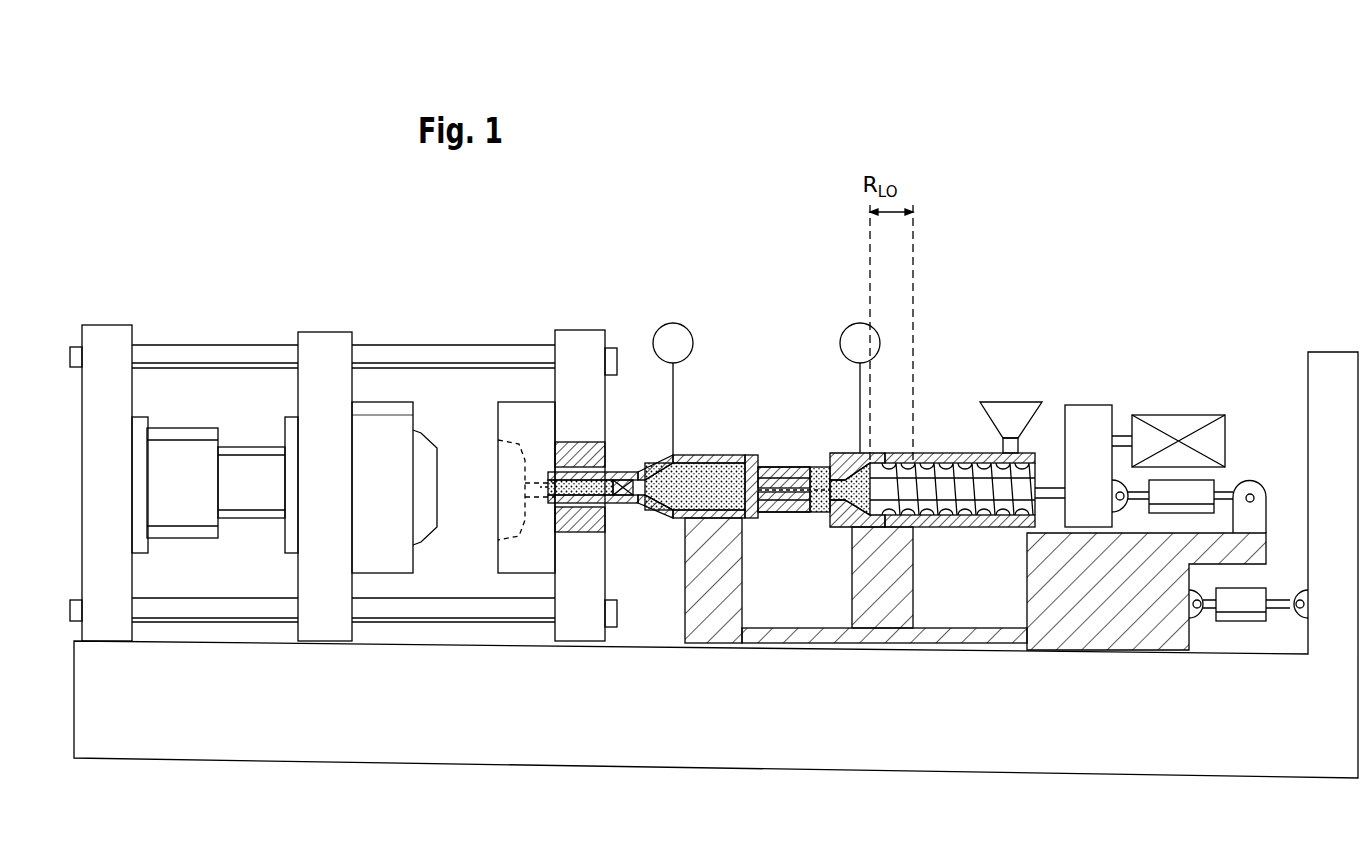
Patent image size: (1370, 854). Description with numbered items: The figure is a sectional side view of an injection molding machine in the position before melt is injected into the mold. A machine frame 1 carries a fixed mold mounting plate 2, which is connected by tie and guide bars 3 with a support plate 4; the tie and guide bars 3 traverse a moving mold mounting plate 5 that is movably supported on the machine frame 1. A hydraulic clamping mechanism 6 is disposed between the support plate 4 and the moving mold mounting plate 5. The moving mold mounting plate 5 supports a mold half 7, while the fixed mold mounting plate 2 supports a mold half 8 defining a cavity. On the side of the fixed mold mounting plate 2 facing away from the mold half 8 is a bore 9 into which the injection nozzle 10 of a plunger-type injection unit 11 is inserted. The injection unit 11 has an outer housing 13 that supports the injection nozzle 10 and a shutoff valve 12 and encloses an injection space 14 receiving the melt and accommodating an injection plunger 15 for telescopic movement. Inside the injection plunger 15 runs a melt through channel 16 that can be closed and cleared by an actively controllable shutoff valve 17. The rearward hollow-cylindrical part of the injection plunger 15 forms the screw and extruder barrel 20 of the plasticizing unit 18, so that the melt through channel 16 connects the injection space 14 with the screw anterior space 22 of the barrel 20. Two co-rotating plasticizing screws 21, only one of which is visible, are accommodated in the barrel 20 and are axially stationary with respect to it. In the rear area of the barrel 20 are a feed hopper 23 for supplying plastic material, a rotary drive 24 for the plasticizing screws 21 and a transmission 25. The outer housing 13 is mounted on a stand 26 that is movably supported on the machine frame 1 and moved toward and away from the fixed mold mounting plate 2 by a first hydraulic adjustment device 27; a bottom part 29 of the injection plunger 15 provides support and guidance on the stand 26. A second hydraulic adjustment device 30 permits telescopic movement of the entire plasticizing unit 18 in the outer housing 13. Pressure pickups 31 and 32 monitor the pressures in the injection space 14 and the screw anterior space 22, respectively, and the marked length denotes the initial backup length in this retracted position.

The machine frame 1 is at (1057, 701).
The fixed mold mounting plate 2 is at (568, 345).
The tie and guide bars 3 is at (422, 357).
The support plate 4 is at (103, 343).
The moving mold mounting plate 5 is at (318, 340).
The hydraulic clamping mechanism 6 is at (177, 452).
The mold half 7 is at (374, 555).
The mold half 8 is at (526, 560).
The bore 9 is at (603, 455).
The injection nozzle 10 is at (600, 545).
The plunger-type injection unit 11 is at (755, 325).
The shutoff valve 12 is at (623, 500).
The outer housing 13 is at (725, 465).
The injection space 14 is at (672, 480).
The injection plunger 15 is at (755, 467).
The melt through channel 16 is at (767, 515).
The shutoff valve 17 is at (810, 512).
The plasticizing unit 18 is at (962, 380).
The screw and extruder barrel 20 is at (925, 453).
The plasticizing screws 21 is at (960, 463).
The screw anterior space 22 is at (882, 455).
The feed hopper 23 is at (1008, 400).
The rotary drive 24 is at (1190, 422).
The transmission 25 is at (1089, 417).
The stand 26 is at (712, 595).
The first hydraulic adjustment device 27 is at (1252, 622).
The bottom part 29 is at (913, 597).
The second hydraulic adjustment device 30 is at (1211, 487).
The pressure pickup 31 is at (665, 322).
The pressure pickup 32 is at (849, 330).